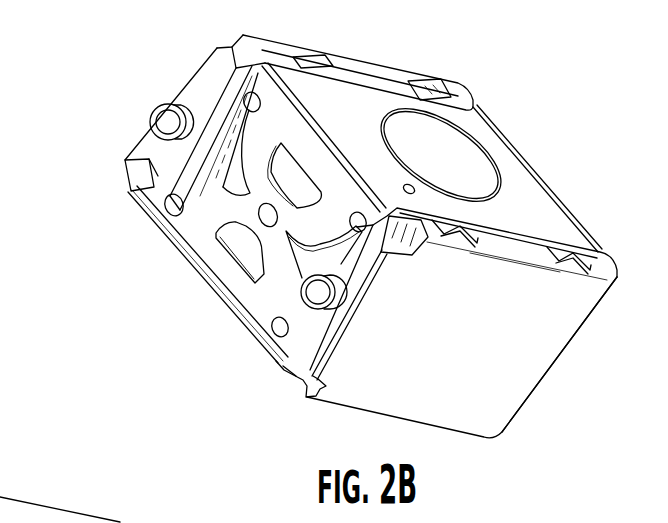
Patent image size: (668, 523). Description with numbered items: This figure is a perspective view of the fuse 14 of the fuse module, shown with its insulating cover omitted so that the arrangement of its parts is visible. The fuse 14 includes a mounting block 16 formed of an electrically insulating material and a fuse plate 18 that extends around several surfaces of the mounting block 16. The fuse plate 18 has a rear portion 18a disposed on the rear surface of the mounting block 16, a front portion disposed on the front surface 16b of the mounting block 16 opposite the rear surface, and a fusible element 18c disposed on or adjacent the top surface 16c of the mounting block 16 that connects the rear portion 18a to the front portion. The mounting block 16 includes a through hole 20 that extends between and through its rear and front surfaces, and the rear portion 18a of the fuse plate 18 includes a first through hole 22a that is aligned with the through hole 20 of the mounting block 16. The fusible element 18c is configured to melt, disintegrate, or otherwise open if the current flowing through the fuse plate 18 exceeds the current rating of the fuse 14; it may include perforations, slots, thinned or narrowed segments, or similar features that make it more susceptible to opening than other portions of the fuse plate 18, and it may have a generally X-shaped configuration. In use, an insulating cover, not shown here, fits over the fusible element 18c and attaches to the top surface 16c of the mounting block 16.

The fuse 14 is at (110, 96).
The mounting block 16 is at (561, 354).
The front surface 16b is at (313, 403).
The top surface 16c is at (385, 80).
The fuse plate 18 is at (577, 235).
The rear portion 18a is at (532, 210).
The fusible element 18c is at (208, 226).
The through hole 20 is at (441, 156).
The first through hole 22a is at (484, 159).